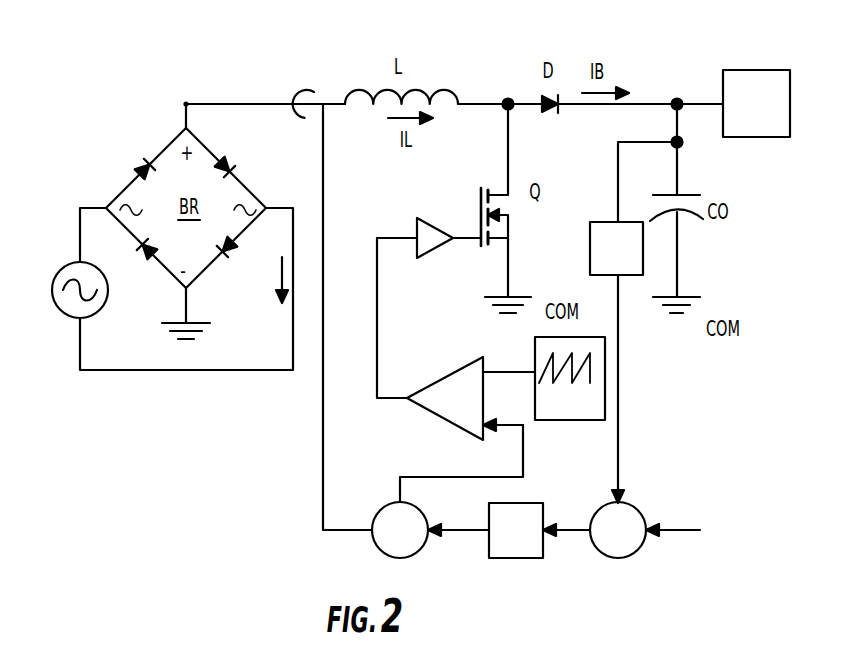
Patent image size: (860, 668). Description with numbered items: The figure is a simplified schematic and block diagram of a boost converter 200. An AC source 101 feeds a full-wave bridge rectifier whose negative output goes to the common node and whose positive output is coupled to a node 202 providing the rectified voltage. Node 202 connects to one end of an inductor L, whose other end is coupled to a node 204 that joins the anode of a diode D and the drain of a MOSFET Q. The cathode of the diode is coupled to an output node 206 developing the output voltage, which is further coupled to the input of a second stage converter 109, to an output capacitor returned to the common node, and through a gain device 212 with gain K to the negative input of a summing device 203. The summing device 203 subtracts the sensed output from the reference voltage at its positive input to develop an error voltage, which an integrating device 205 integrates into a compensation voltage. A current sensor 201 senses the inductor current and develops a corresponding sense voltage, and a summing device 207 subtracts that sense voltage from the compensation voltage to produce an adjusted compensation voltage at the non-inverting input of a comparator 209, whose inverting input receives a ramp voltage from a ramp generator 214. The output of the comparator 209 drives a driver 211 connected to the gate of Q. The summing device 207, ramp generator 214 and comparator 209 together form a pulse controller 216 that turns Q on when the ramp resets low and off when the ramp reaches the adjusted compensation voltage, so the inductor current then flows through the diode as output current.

The boost converter 200 is at (213, 460).
The AC source 101 is at (68, 263).
The node 202 is at (199, 103).
The current sensor 201 is at (309, 90).
The node 204 is at (505, 98).
The output node 206 is at (672, 99).
The second stage converter 109 is at (752, 72).
The gain device 212 is at (603, 222).
The driver 211 is at (432, 228).
The pulse controller 216 is at (418, 442).
The comparator 209 is at (468, 363).
The ramp generator 214 is at (555, 416).
The summing device 207 is at (388, 505).
The integrating device 205 is at (530, 503).
The summing device 203 is at (630, 504).